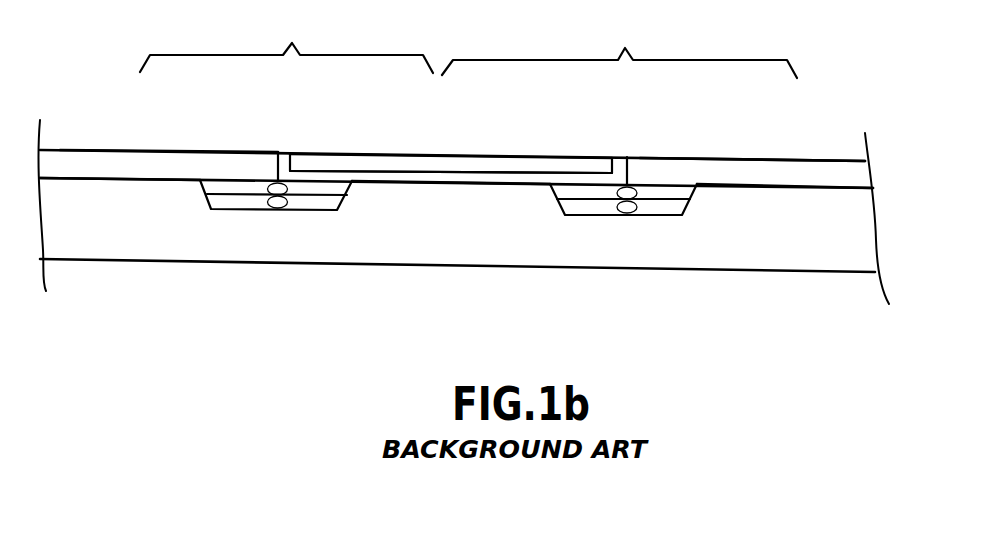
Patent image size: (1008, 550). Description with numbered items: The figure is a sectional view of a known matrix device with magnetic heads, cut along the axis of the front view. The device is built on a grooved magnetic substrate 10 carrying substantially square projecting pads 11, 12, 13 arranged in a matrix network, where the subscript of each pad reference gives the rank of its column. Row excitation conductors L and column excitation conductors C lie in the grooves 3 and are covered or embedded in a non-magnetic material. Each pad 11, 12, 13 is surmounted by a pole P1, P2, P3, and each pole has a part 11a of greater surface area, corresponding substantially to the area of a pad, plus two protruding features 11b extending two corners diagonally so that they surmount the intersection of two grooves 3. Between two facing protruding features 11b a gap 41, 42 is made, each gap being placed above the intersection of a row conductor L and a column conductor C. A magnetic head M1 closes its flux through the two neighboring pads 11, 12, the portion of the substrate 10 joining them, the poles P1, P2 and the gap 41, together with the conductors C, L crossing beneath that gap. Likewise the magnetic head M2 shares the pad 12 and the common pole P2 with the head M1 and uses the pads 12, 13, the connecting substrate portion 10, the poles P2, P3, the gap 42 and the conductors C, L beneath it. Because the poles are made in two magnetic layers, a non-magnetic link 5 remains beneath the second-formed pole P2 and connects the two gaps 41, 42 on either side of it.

The grooved magnetic substrate 10 is at (775, 258).
The pole part with greater surface area 11a is at (96, 160).
The protruding features 11b is at (231, 159).
The pad 11 is at (150, 187).
The pad 12 is at (472, 192).
The pad 13 is at (867, 223).
The gap 41 is at (278, 152).
The gap 42 is at (627, 157).
The grooves 3 is at (345, 195).
The non-magnetic link 5 is at (512, 177).
The row excitation conductor L is at (228, 200).
The column excitation conductor C is at (312, 188).
The pole P1 is at (171, 160).
The pole P2 is at (483, 158).
The pole P3 is at (769, 168).
The magnetic head M1 is at (286, 43).
The magnetic head M2 is at (619, 47).